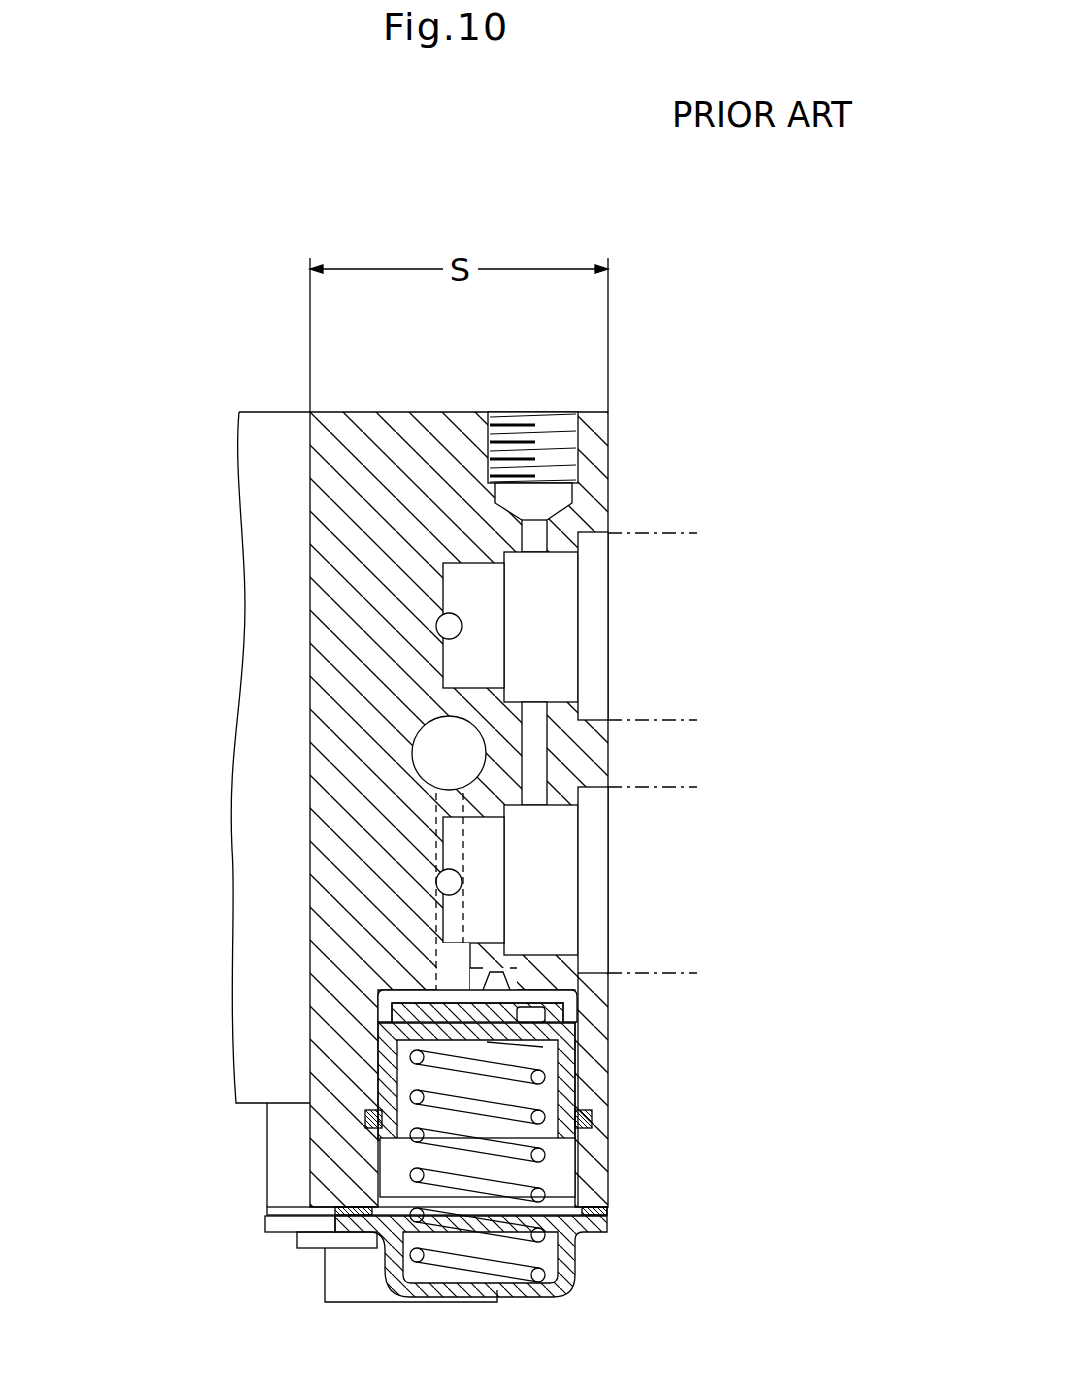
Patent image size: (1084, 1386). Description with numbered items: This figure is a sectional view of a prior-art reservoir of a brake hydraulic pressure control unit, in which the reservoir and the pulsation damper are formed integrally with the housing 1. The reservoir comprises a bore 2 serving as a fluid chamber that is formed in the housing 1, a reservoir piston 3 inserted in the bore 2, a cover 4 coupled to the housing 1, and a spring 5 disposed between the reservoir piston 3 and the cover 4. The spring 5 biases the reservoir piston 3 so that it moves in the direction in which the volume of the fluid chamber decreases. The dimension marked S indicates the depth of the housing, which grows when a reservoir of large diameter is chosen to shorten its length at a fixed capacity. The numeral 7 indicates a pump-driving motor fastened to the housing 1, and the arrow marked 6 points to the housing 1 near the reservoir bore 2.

The housing 1 is at (349, 627).
The bore 2 is at (397, 1000).
The reservoir piston 3 is at (565, 1068).
The cover 4 is at (567, 1268).
The spring 5 is at (577, 1165).
The passage 6 is at (613, 1018).
The pump-driving motor 7 is at (275, 757).